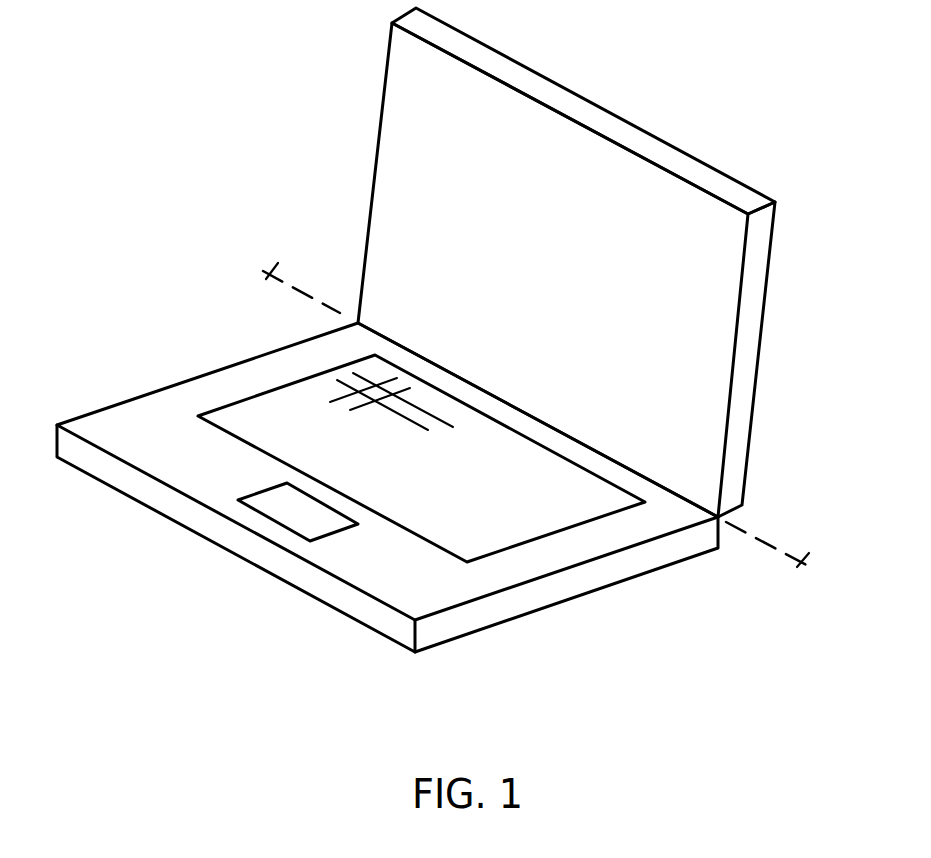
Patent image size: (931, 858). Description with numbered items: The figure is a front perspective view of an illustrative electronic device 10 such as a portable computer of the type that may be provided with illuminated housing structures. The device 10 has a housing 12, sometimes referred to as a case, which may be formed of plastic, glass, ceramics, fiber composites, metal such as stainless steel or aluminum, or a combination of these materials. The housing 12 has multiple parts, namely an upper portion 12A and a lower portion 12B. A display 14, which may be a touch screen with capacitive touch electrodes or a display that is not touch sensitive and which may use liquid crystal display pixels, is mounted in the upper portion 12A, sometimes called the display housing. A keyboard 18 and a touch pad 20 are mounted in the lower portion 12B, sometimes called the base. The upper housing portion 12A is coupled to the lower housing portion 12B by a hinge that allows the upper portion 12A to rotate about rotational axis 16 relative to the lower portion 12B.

The electronic device 10 is at (737, 68).
The housing 12 is at (752, 417).
The upper housing portion 12A is at (380, 15).
The lower housing portion 12B is at (345, 326).
The display 14 is at (705, 311).
The rotational axis 16 is at (273, 272).
The keyboard 18 is at (543, 537).
The touch pad 20 is at (282, 513).